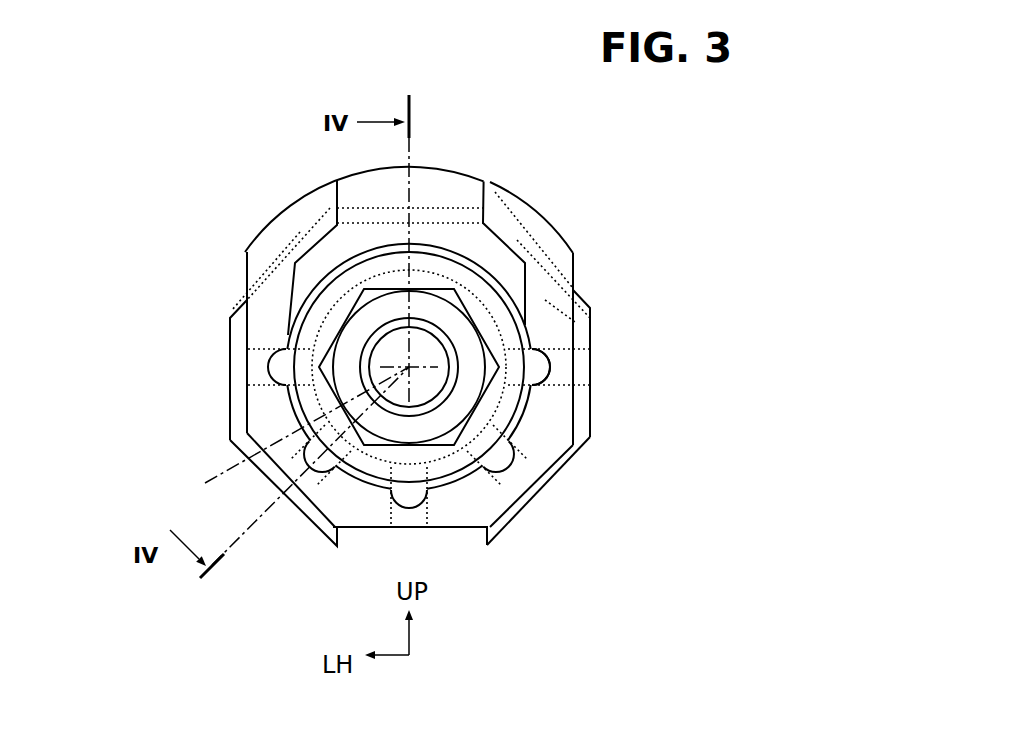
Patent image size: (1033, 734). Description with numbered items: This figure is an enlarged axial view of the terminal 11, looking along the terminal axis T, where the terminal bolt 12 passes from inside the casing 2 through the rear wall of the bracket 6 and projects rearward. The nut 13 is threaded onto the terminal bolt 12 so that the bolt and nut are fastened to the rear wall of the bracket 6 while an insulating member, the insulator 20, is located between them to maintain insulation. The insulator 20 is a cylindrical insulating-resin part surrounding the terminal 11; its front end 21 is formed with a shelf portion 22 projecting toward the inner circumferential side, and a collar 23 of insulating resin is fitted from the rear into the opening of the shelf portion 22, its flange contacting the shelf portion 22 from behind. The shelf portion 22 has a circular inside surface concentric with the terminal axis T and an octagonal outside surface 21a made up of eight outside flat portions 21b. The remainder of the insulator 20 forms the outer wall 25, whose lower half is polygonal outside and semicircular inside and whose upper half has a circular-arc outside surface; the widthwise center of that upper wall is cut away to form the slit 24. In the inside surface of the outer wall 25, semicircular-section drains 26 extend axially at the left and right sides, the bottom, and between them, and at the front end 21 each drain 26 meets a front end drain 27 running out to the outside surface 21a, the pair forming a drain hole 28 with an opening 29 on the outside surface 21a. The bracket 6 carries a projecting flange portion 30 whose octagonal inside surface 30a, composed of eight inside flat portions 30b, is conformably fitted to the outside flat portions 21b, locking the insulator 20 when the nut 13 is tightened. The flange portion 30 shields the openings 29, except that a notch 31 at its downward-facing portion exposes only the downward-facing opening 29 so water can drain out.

The casing 2 is at (637, 286).
The bracket 6 is at (603, 190).
The terminal 11 is at (306, 323).
The terminal bolt 12 is at (390, 348).
The nut 13 is at (352, 312).
The insulator 20 is at (537, 190).
The front end 21 is at (545, 265).
The outside surface 21a is at (658, 275).
The outside flat portion 21b is at (575, 268).
The shelf portion 22 is at (487, 268).
The collar 23 is at (530, 317).
The slit 24 is at (481, 193).
The outer wall 25 is at (577, 250).
The drain 26 is at (541, 363).
The front end drain 27 is at (555, 362).
The drain hole 28 is at (257, 398).
The opening 29 is at (264, 367).
The flange portion 30 is at (600, 405).
The inside surface 30a is at (488, 489).
The inside flat portion 30b is at (585, 443).
The notch 31 is at (485, 535).
The terminal axis T is at (296, 432).